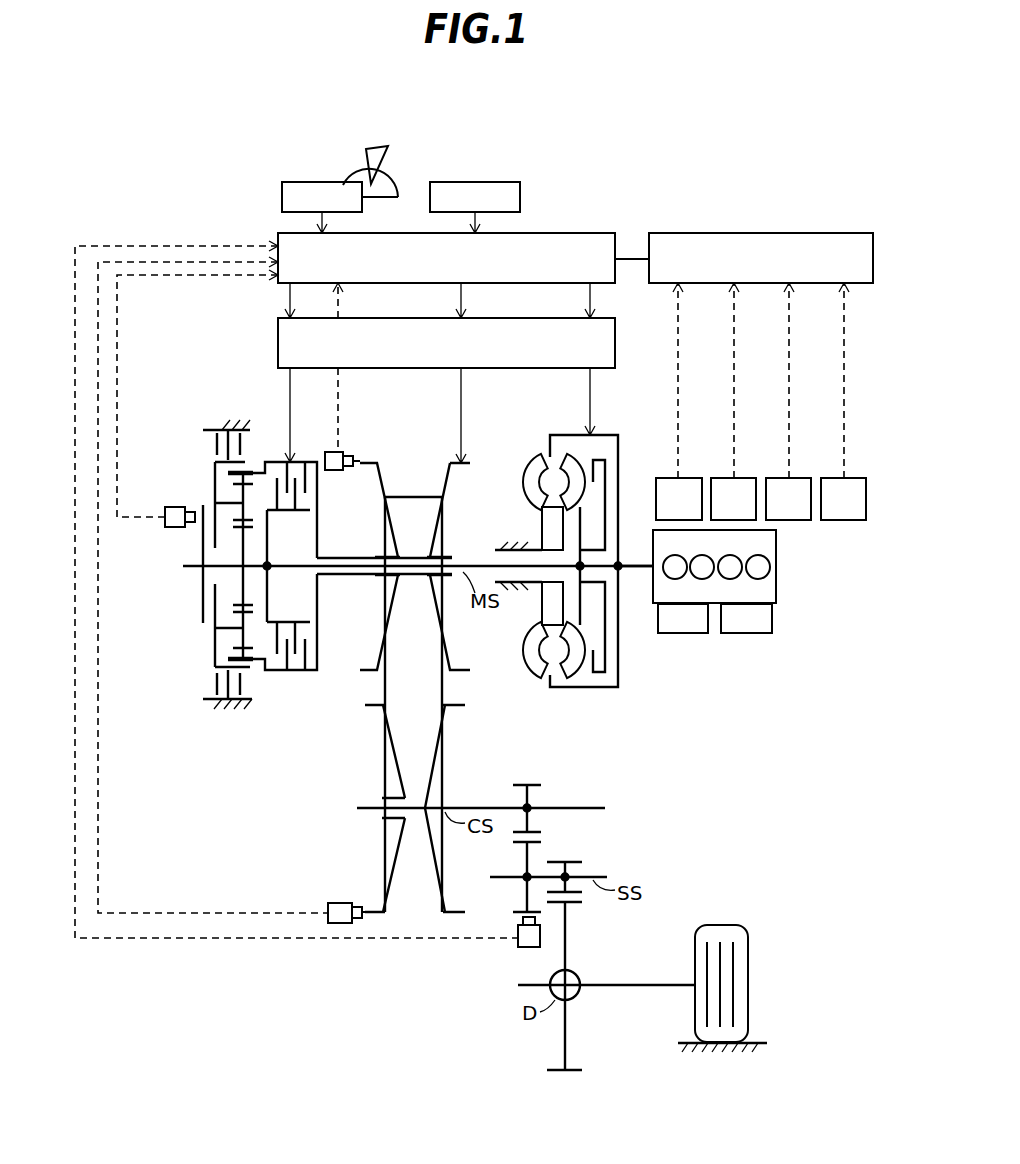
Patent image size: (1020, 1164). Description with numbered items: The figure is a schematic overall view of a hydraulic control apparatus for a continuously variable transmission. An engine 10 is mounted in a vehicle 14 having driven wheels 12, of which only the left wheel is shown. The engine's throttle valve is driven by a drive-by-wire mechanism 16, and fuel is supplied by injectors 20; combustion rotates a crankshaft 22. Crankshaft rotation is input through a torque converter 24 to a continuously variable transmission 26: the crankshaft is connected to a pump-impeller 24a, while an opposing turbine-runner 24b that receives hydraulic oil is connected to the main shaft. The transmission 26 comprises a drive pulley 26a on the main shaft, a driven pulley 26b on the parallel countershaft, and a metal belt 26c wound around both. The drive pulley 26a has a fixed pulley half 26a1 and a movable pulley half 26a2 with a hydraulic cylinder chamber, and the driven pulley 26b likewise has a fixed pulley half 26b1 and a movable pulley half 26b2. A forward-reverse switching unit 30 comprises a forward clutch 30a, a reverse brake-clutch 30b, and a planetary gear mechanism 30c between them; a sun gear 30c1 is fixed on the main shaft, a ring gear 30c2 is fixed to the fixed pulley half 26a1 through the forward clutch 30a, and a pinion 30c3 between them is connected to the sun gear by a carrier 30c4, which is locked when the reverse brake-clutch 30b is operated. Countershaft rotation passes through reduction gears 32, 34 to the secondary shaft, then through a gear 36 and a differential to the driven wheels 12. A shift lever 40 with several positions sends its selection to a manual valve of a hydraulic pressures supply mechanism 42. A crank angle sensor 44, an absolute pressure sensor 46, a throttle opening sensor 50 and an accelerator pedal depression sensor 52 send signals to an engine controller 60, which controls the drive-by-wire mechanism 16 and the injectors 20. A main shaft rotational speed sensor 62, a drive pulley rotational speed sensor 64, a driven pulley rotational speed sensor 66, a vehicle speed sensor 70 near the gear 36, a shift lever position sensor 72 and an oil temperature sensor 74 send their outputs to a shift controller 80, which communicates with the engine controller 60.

The engine 10 is at (729, 602).
The driven wheels 12 is at (748, 957).
The vehicle 14 is at (734, 141).
The DBW mechanism 16 is at (670, 633).
The injectors 20 is at (732, 633).
The crankshaft 22 is at (628, 572).
The torque converter 24 is at (550, 564).
The pump-impeller 24a is at (536, 460).
The turbine-runner 24b is at (573, 683).
The continuously variable transmission 26 is at (409, 677).
The drive pulley 26a is at (438, 556).
The fixed pulley half 26a1 is at (377, 463).
The movable pulley half 26a2 is at (452, 495).
The driven pulley 26b is at (405, 808).
The fixed pulley half 26b1 is at (452, 707).
The movable pulley half 26b2 is at (377, 707).
The metal belt 26c is at (398, 683).
The forward-reverse switching unit 30 is at (188, 429).
The forward clutch 30a is at (283, 510).
The reverse brake-clutch 30b is at (213, 440).
The planetary gear mechanism 30c is at (191, 591).
The sun gear 30c1 is at (243, 590).
The ring gear 30c2 is at (290, 670).
The pinion 30c3 is at (240, 630).
The carrier 30c4 is at (240, 650).
The reduction gear 32 is at (533, 786).
The reduction gear 34 is at (525, 892).
The gear 36 is at (566, 862).
The shift lever 40 is at (387, 144).
The hydraulic pressures supply mechanism 42 is at (604, 318).
The crank angle sensor 44 is at (681, 478).
The absolute pressure sensor 46 is at (738, 478).
The throttle opening sensor 50 is at (794, 478).
The accelerator pedal depression sensor 52 is at (849, 478).
The engine controller 60 is at (818, 233).
The NT sensor 62 is at (167, 507).
The NDR sensor 64 is at (328, 452).
The NDN sensor 66 is at (323, 905).
The VEL sensor 70 is at (527, 950).
The shift lever position sensor 72 is at (300, 182).
The oil temperature sensor 74 is at (500, 182).
The shift controller 80 is at (560, 233).